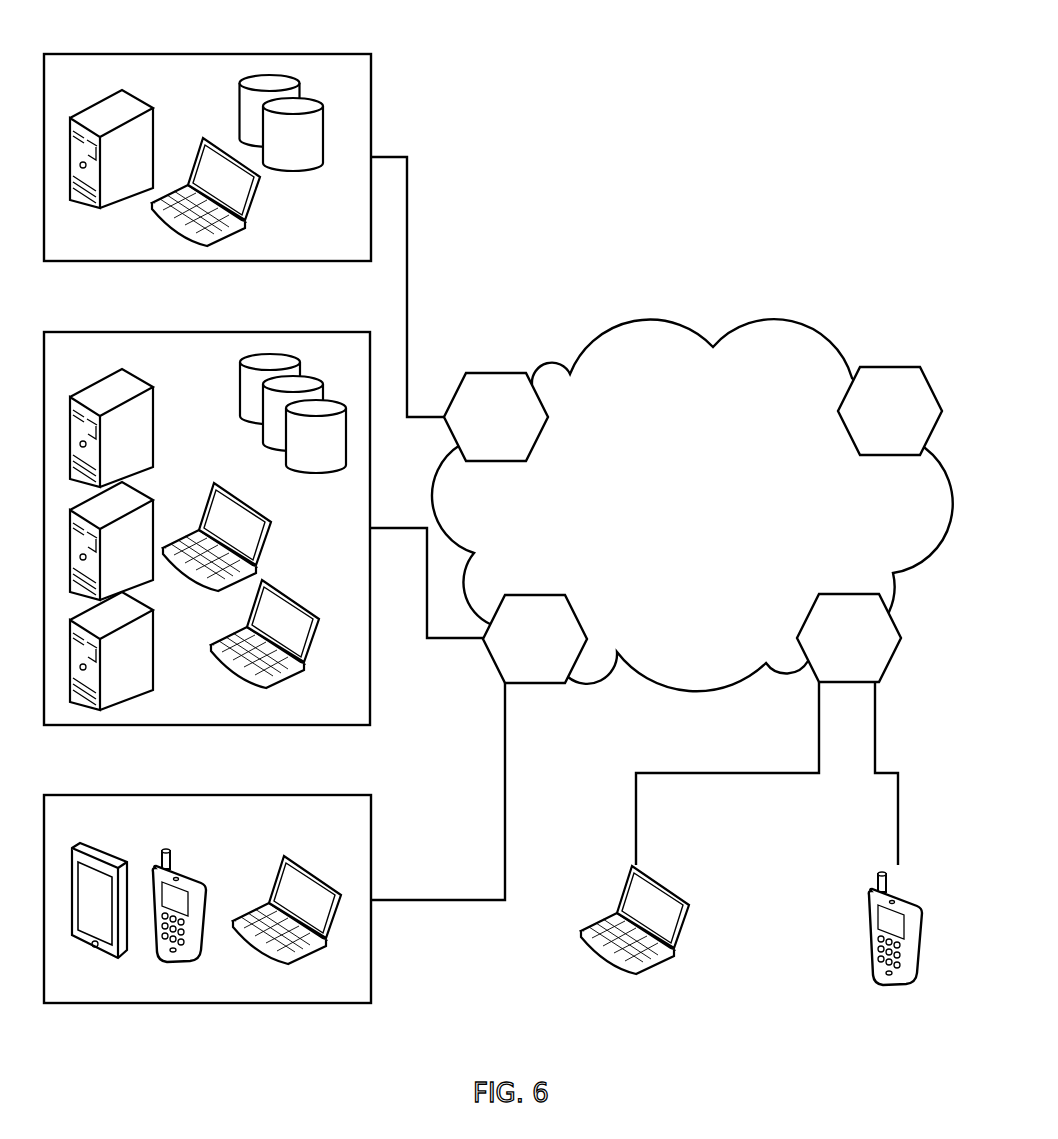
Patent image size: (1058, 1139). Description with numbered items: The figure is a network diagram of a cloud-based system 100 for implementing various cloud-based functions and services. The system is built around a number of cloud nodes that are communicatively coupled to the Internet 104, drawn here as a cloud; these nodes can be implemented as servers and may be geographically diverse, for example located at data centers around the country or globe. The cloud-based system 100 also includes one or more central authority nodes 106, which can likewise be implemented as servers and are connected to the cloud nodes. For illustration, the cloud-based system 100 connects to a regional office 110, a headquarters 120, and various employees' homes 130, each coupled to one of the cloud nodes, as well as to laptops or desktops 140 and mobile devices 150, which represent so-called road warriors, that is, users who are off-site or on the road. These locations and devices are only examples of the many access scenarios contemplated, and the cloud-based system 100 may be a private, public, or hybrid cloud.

The cloud-based system 100 is at (724, 93).
The Internet 104 is at (825, 335).
The central authority node 106 is at (898, 362).
The regional office 110 is at (280, 54).
The headquarters 120 is at (285, 332).
The employee's home 130 is at (290, 795).
The laptop/desktop 140 is at (688, 902).
The mobile device 150 is at (865, 918).